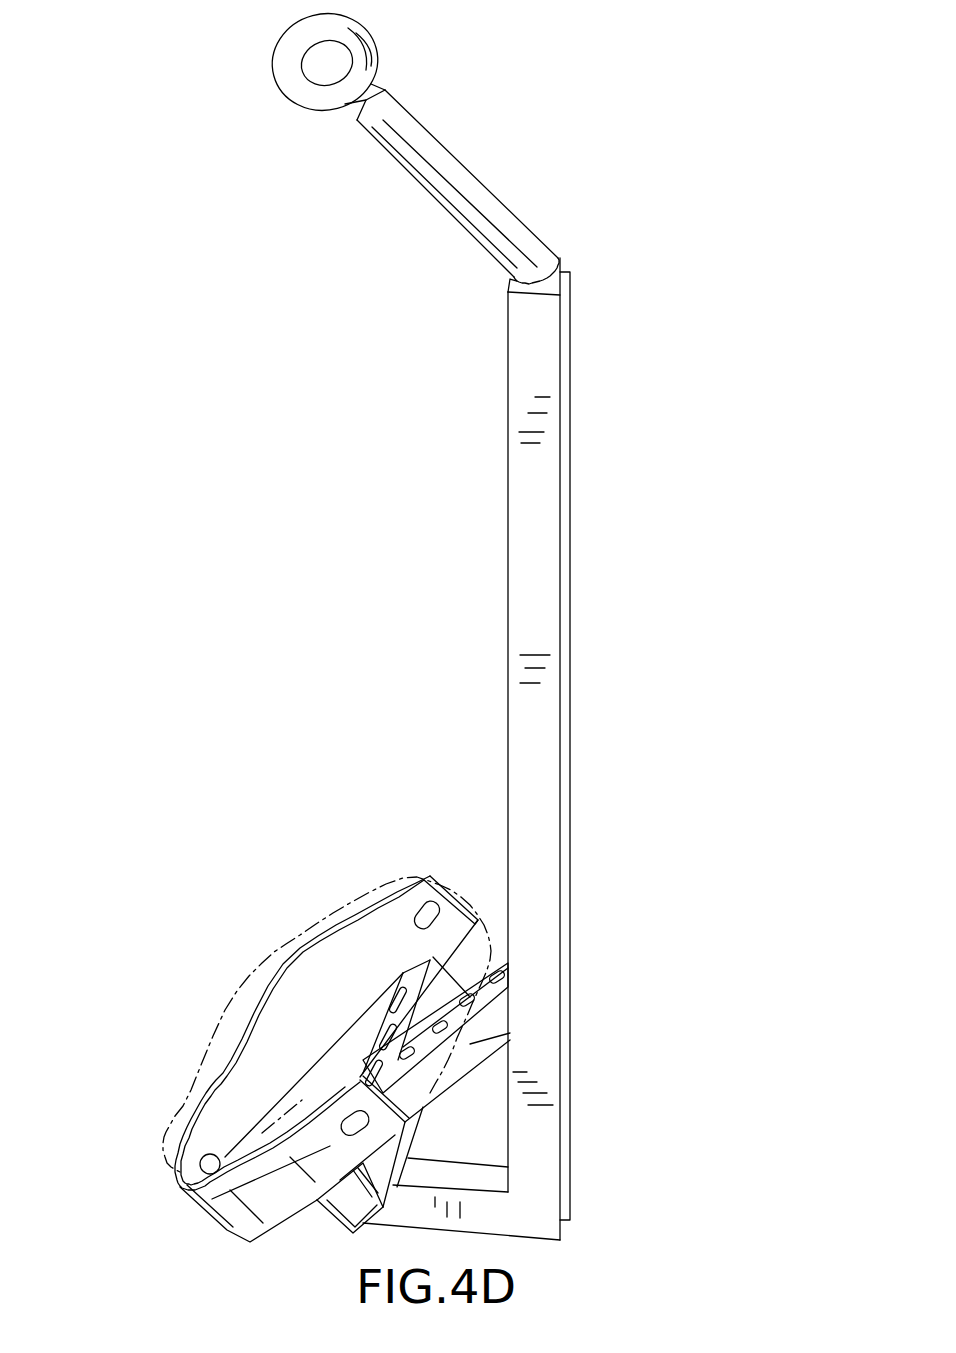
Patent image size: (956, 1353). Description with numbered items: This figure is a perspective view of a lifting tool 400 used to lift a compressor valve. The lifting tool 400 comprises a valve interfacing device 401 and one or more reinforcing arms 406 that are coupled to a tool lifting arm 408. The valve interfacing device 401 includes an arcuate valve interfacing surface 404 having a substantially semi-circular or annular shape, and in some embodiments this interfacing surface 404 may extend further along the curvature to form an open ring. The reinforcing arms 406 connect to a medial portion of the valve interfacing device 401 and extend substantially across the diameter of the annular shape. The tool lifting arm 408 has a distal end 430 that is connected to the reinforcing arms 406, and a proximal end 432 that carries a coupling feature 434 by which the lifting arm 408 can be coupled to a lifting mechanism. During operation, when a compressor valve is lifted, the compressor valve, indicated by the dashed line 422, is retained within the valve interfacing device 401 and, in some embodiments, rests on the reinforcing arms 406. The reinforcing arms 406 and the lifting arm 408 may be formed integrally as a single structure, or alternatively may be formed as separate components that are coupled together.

The lifting tool 400 is at (610, 318).
The valve interfacing device 401 is at (214, 1220).
The arcuate valve interfacing surface 404 is at (369, 974).
The reinforcing arms 406 is at (470, 1044).
The tool lifting arm 408 is at (543, 620).
The compressor valve 422 is at (289, 948).
The distal end 430 is at (538, 1157).
The proximal end 432 is at (400, 116).
The coupling feature 434 is at (376, 43).